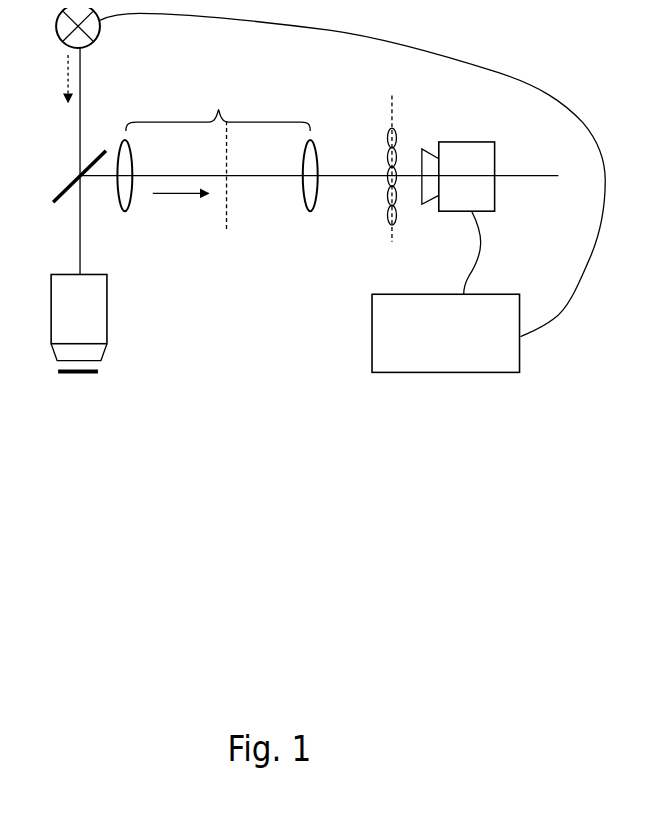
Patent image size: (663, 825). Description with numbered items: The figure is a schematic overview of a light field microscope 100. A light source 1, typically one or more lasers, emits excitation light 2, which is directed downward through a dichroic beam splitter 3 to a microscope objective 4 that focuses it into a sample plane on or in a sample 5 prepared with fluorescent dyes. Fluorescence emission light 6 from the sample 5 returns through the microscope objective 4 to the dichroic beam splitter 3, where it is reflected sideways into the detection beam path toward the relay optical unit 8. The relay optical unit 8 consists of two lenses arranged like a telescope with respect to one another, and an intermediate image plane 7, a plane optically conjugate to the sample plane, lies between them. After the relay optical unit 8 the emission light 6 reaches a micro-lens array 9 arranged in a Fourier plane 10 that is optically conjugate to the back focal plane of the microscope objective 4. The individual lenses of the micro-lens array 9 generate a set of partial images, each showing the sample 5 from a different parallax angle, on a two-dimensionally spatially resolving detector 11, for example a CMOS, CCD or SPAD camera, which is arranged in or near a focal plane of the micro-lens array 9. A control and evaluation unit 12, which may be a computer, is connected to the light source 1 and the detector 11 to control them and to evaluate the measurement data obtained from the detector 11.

The light source 1 is at (68, 28).
The excitation light 2 is at (56, 78).
The dichroic beam splitter 3 is at (75, 176).
The microscope objective 4 is at (70, 317).
The sample 5 is at (78, 384).
The emission light 6 is at (181, 206).
The intermediate image plane 7 is at (227, 188).
The relay optical unit 8 is at (217, 146).
The micro-lens array 9 is at (384, 211).
The Fourier plane 10 is at (398, 156).
The detector 11 is at (458, 176).
The control and evaluation unit 12 is at (445, 333).
The light field microscope 100 is at (232, 396).